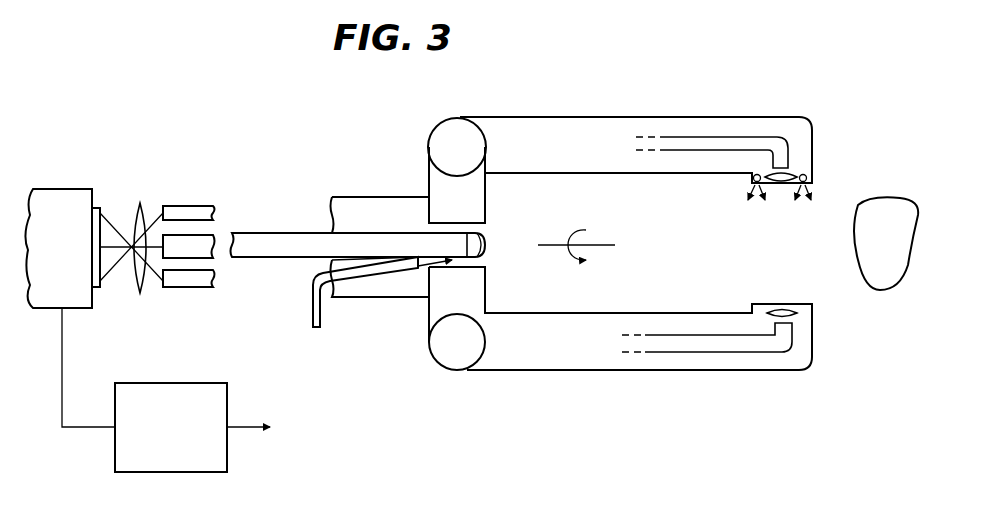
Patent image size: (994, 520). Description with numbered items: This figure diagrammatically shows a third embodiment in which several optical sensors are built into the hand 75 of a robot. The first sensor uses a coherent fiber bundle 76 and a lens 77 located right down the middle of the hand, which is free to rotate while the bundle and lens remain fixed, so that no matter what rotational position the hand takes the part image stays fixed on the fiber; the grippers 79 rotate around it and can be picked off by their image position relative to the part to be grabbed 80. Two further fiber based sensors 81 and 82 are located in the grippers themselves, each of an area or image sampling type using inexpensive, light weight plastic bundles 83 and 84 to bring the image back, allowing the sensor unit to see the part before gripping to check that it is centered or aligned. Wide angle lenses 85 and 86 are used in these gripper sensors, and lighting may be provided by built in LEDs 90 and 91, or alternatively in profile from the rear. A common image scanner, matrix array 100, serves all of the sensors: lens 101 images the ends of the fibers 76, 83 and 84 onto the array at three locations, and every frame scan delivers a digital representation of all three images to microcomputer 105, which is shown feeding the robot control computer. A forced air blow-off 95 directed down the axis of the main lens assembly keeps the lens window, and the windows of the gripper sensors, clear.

The hand 75 is at (432, 172).
The coherent fiber bundle 76 is at (288, 238).
The lens 77 is at (486, 243).
The grippers 79 is at (533, 117).
The part to be grabbed 80 is at (894, 245).
The fiber based sensor 81 is at (784, 108).
The fiber based sensor 82 is at (800, 380).
The plastic bundle 83 is at (200, 208).
The plastic bundle 84 is at (193, 282).
The wide angle lens 85 is at (790, 173).
The wide angle lens 86 is at (795, 314).
The built in LED 90 is at (808, 178).
The built in LED 91 is at (752, 178).
The forced air blow-off 95 is at (318, 312).
The matrix array 100 is at (66, 262).
The lens 101 is at (140, 203).
The microcomputer 105 is at (181, 467).